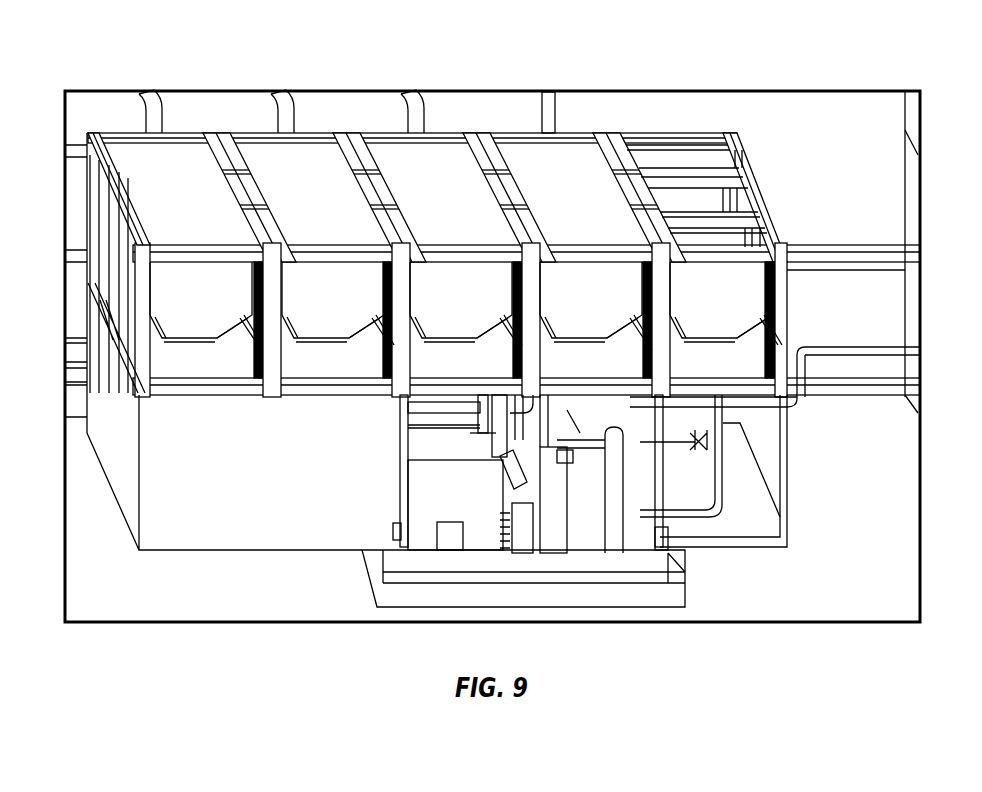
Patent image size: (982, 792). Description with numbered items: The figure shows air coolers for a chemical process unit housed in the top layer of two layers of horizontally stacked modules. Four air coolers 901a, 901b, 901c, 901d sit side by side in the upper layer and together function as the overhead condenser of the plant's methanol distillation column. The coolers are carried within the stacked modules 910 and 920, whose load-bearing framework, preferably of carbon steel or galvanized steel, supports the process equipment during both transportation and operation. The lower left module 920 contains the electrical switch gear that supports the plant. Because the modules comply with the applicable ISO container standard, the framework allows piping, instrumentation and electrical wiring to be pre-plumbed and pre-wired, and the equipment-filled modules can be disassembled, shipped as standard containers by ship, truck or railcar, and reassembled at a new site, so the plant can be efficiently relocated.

The air cooler 901a is at (176, 152).
The air cooler 901b is at (309, 152).
The air cooler 901c is at (443, 152).
The air cooler 901d is at (576, 152).
The module 910 is at (112, 268).
The lower left module 920 is at (128, 498).